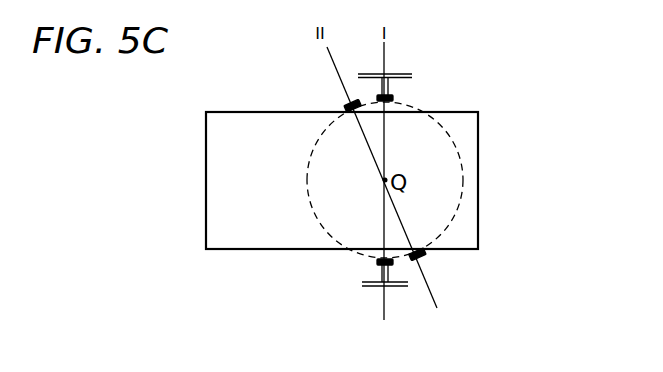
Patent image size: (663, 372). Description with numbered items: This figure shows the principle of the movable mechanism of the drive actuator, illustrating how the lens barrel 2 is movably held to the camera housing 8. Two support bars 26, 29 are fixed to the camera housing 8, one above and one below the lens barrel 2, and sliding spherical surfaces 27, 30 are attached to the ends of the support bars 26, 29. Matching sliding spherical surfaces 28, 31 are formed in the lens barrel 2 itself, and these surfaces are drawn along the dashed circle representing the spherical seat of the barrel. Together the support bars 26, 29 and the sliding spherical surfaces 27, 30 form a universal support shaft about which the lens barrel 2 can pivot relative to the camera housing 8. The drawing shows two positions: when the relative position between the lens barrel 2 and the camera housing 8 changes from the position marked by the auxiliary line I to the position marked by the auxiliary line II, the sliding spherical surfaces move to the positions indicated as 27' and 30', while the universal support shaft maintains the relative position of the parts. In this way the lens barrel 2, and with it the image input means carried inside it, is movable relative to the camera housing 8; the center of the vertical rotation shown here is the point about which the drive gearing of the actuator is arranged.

The lens barrel 2 is at (478, 138).
The camera housing 8 is at (403, 75).
The support bar 26 is at (393, 94).
The sliding spherical surface 27 is at (438, 81).
The sliding spherical surface 27' is at (331, 96).
The sliding spherical surface 28 is at (403, 104).
The support bar 29 is at (380, 273).
The sliding spherical surface 30 is at (346, 277).
The sliding spherical surface 30' is at (444, 264).
The sliding spherical surface 31 is at (365, 258).